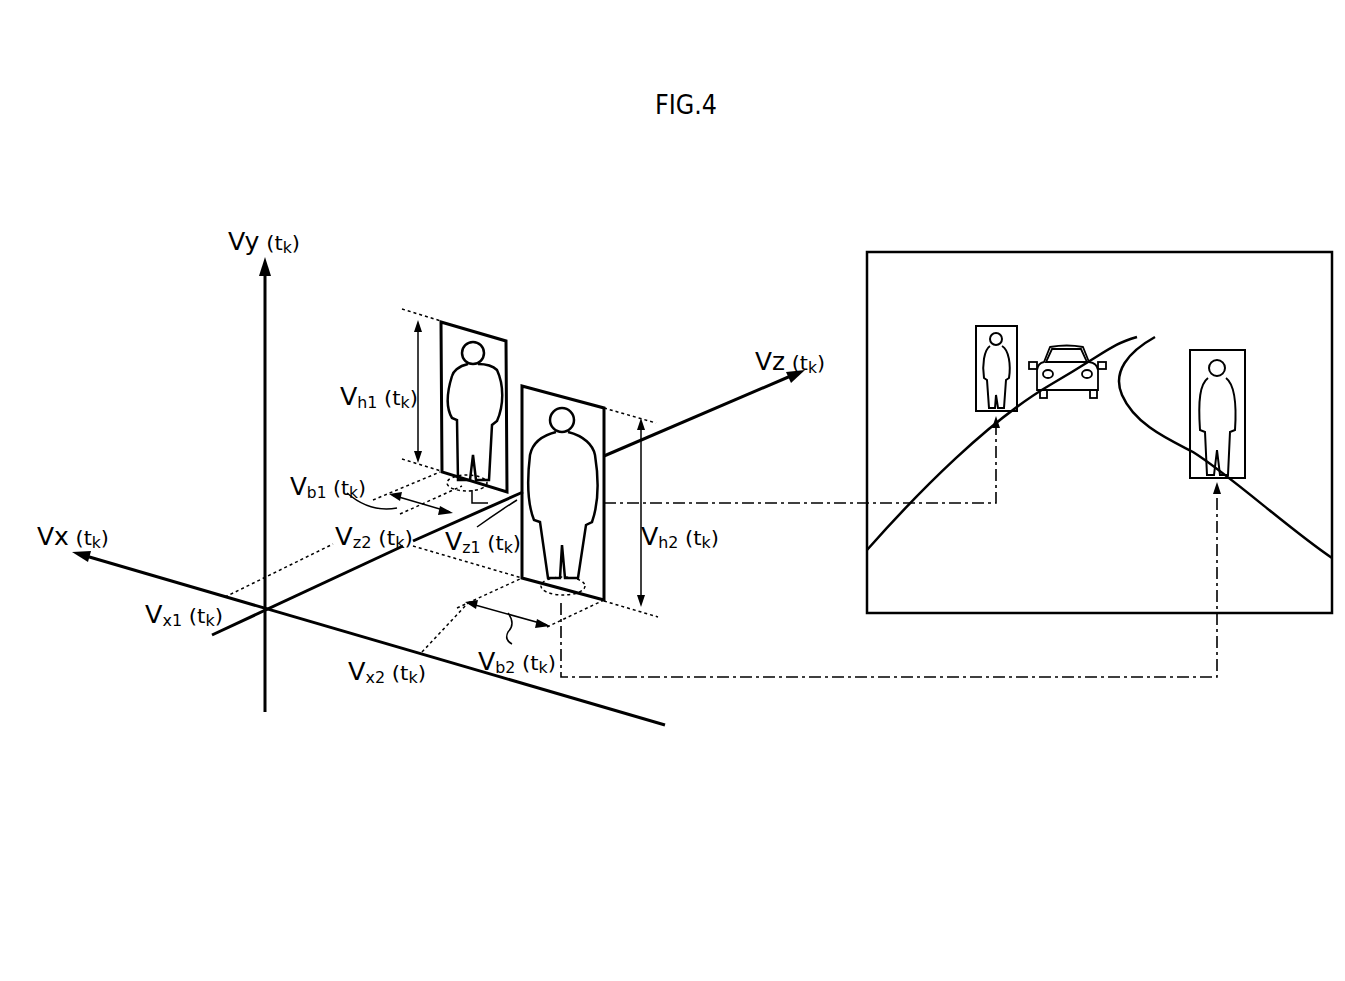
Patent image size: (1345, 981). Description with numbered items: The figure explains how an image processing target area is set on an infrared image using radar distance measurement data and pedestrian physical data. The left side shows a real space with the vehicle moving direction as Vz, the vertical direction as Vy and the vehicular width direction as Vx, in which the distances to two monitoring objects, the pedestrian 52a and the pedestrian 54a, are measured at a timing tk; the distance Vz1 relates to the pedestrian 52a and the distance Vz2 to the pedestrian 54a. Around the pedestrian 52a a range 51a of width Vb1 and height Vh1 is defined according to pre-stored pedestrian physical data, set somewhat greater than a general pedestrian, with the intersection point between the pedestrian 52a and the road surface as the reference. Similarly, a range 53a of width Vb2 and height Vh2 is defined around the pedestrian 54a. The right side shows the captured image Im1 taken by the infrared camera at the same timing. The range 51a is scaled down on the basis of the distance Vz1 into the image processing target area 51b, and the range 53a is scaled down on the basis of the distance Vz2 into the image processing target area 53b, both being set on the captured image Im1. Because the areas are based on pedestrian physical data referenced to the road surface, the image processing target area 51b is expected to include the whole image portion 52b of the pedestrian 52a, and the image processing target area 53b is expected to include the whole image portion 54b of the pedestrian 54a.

The range 51a is at (470, 330).
The pedestrian 52a is at (493, 368).
The range 53a is at (558, 400).
The pedestrian 54a is at (573, 410).
The captured image Im1 is at (1212, 252).
The image processing target area 51b is at (988, 326).
The image portion 52b is at (987, 363).
The image processing target area 53b is at (1232, 350).
The image portion 54b is at (1227, 397).